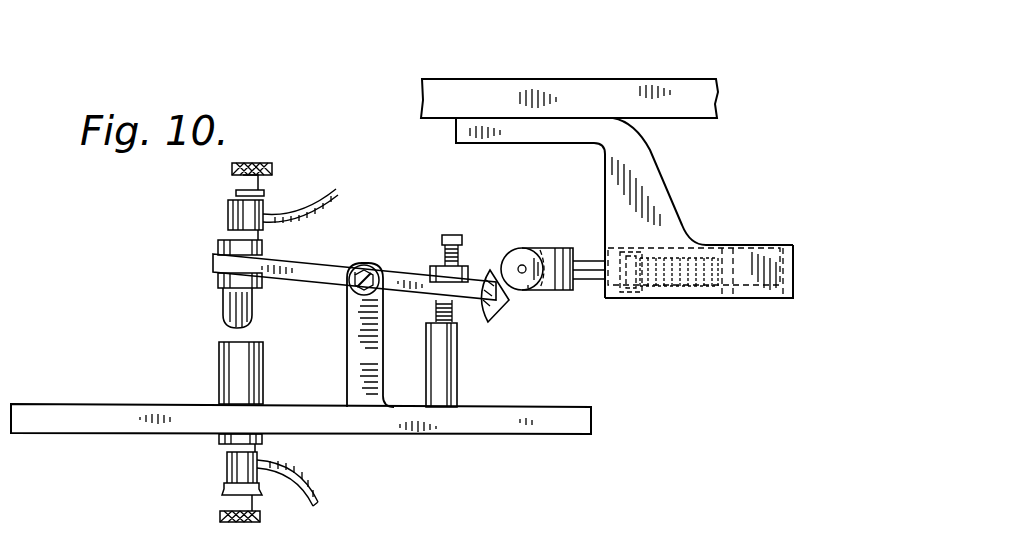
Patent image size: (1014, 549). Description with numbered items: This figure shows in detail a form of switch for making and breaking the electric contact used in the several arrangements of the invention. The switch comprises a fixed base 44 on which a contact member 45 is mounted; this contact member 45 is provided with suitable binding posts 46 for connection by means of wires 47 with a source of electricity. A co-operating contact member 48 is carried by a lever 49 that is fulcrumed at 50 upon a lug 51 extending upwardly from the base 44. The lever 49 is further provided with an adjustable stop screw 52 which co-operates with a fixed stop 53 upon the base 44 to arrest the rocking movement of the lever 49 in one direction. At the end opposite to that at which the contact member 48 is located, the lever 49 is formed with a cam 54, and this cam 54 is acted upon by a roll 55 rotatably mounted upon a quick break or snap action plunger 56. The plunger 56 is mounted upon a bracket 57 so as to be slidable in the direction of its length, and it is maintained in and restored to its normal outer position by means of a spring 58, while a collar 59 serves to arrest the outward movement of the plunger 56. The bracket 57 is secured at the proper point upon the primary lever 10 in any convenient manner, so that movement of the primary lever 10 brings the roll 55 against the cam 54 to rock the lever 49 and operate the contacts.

The primary lever 10 is at (481, 86).
The fixed base 44 is at (481, 426).
The contact member 45 is at (230, 366).
The binding posts 46 is at (227, 469).
The wires 47 is at (306, 483).
The co-operating contact member 48 is at (229, 300).
The lever 49 is at (307, 272).
The fulcrum 50 is at (371, 271).
The lug 51 is at (354, 341).
The adjustable stop screw 52 is at (462, 241).
The fixed stop 53 is at (450, 361).
The cam 54 is at (497, 301).
The roll 55 is at (533, 288).
The quick break or snap action plunger 56 is at (588, 260).
The bracket 57 is at (658, 187).
The spring 58 is at (692, 286).
The collar 59 is at (637, 287).